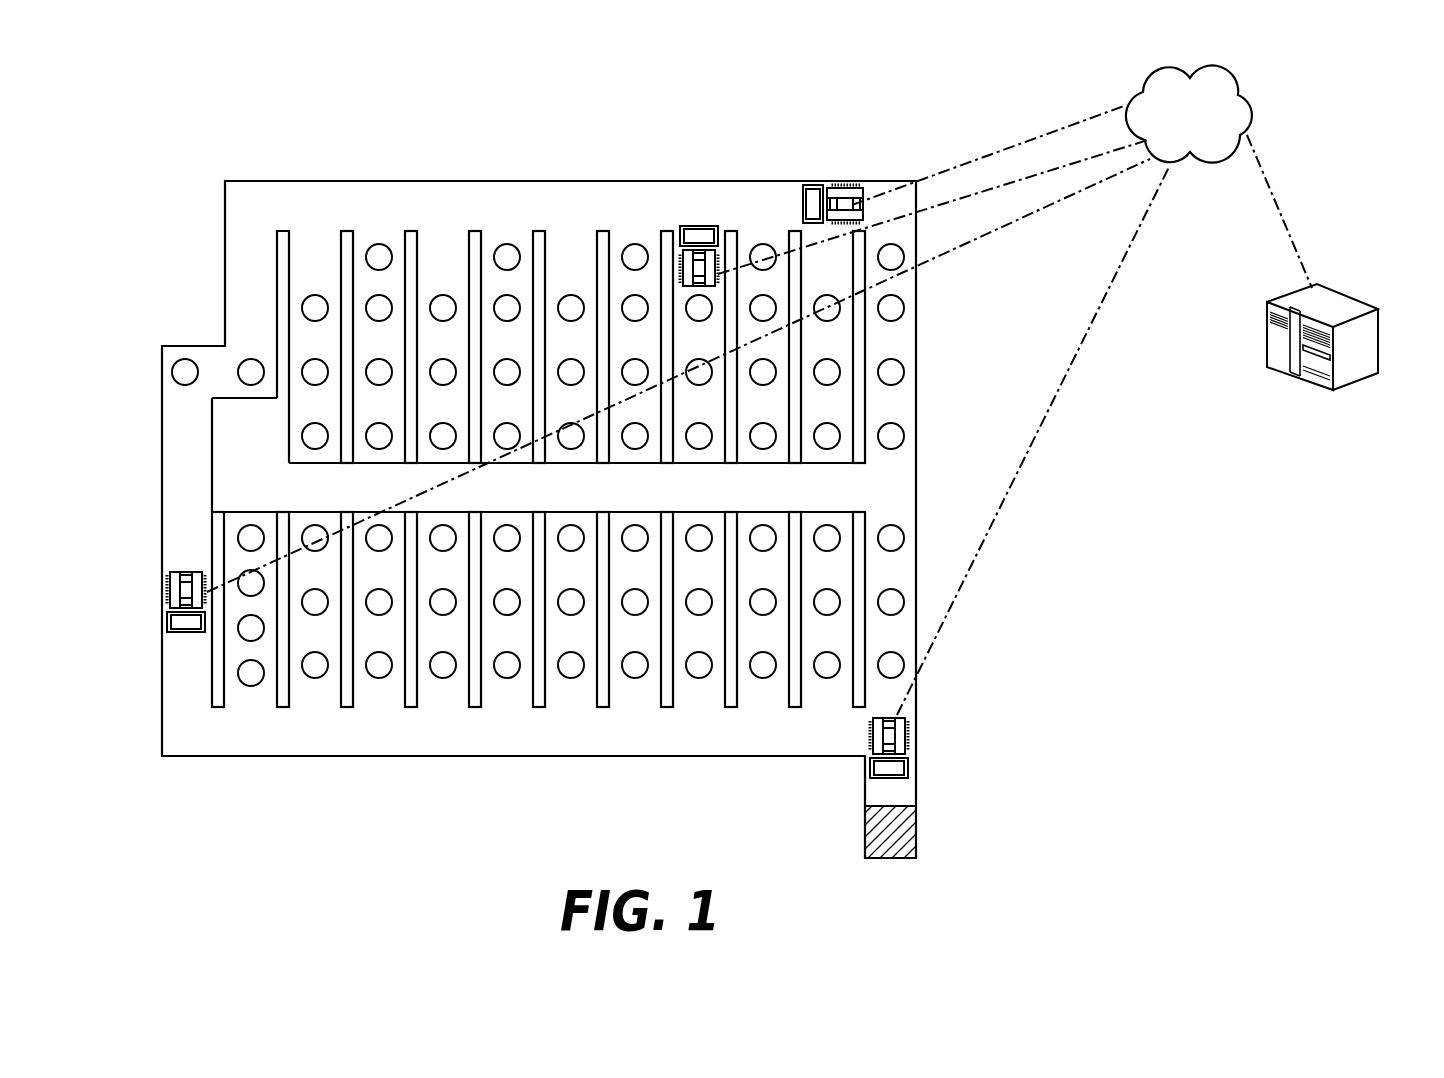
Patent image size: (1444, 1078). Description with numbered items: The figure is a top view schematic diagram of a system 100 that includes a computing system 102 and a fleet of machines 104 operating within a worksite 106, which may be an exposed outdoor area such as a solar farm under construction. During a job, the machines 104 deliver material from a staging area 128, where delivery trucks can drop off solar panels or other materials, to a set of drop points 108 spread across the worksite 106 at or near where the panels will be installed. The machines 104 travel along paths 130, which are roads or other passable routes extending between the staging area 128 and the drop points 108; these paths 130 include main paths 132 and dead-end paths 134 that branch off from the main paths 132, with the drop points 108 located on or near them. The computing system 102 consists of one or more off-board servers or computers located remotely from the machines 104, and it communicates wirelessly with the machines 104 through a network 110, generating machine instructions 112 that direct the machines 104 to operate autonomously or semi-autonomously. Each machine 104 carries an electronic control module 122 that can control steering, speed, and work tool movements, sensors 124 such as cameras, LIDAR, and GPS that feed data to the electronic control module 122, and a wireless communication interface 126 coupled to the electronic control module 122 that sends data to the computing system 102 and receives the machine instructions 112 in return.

The system 100 is at (1113, 763).
The computing system 102 is at (1372, 350).
The machine 104 is at (700, 256).
The worksite 106 is at (143, 160).
The drop point 108 is at (505, 257).
The network 110 is at (1217, 166).
The machine instruction 112 is at (997, 195).
The electronic control module 122 is at (856, 205).
The sensor 124 is at (834, 205).
The wireless communication interface 126 is at (841, 205).
The staging area 128 is at (892, 837).
The path 130 is at (191, 285).
The main path 132 is at (386, 200).
The dead-end path 134 is at (299, 410).